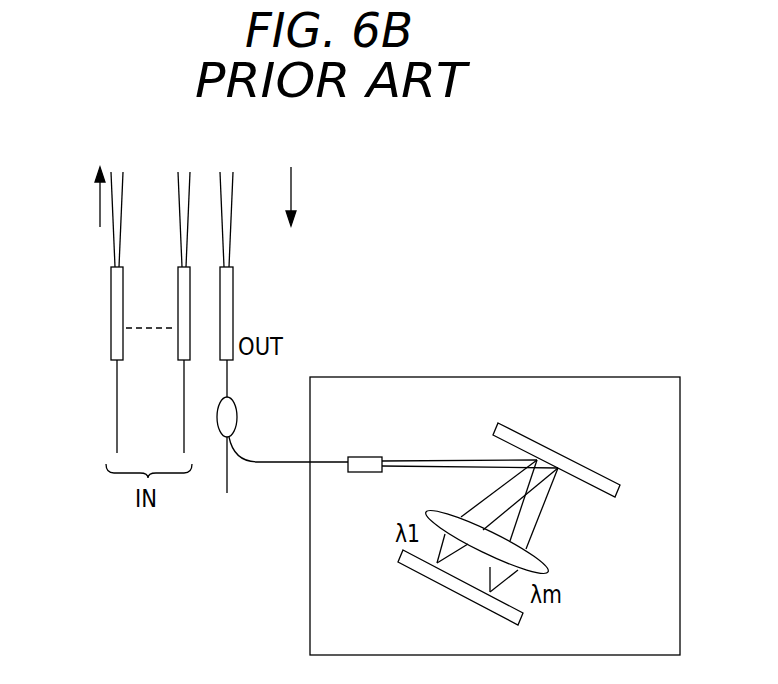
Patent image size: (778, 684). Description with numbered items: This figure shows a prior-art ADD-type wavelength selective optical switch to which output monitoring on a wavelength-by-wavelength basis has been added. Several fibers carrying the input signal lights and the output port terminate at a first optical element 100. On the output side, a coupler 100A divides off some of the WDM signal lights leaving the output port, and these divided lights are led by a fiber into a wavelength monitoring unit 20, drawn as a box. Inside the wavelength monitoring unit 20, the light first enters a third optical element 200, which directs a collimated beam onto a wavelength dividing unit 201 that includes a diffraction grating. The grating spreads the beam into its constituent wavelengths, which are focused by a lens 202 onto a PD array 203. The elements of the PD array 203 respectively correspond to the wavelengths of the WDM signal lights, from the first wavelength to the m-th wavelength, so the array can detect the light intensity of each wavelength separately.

The wavelength monitoring unit 20 is at (468, 377).
The first optical element 100 is at (229, 293).
The coupler 100A is at (237, 410).
The third optical element 200 is at (363, 457).
The wavelength dividing unit 201 is at (515, 432).
The lens 202 is at (548, 570).
The PD array 203 is at (470, 595).